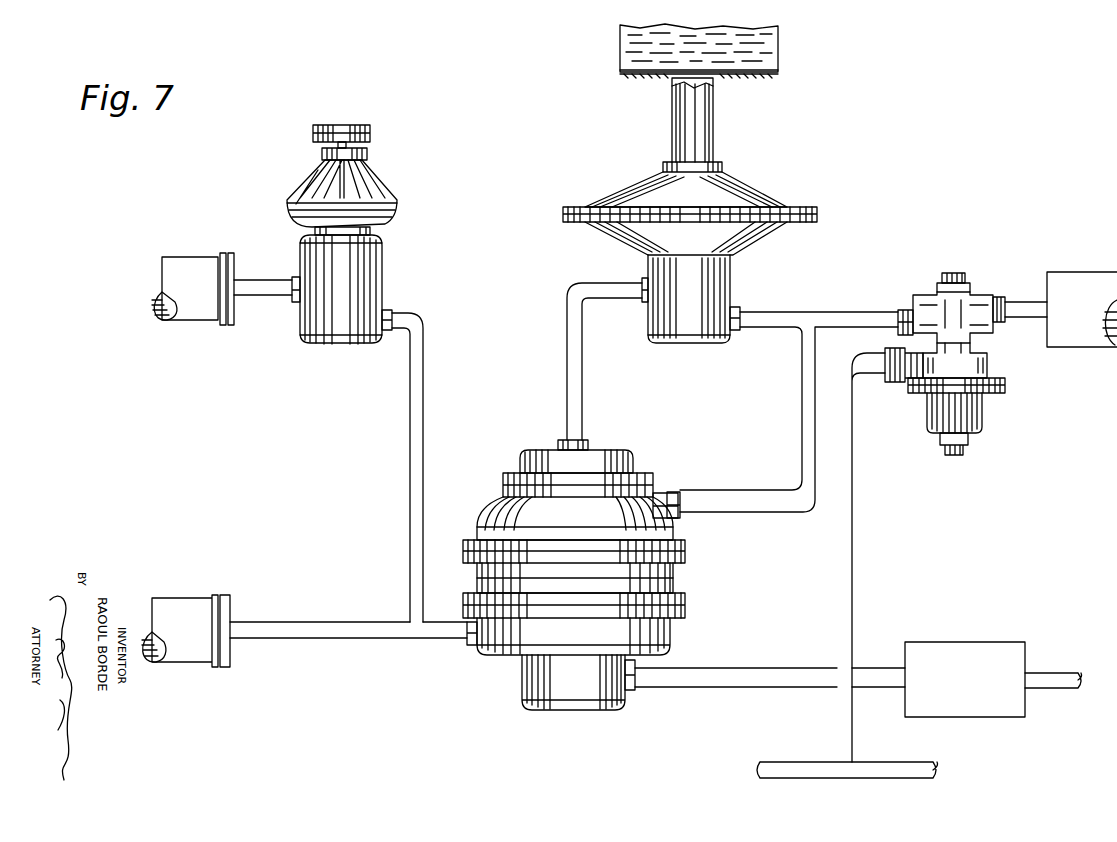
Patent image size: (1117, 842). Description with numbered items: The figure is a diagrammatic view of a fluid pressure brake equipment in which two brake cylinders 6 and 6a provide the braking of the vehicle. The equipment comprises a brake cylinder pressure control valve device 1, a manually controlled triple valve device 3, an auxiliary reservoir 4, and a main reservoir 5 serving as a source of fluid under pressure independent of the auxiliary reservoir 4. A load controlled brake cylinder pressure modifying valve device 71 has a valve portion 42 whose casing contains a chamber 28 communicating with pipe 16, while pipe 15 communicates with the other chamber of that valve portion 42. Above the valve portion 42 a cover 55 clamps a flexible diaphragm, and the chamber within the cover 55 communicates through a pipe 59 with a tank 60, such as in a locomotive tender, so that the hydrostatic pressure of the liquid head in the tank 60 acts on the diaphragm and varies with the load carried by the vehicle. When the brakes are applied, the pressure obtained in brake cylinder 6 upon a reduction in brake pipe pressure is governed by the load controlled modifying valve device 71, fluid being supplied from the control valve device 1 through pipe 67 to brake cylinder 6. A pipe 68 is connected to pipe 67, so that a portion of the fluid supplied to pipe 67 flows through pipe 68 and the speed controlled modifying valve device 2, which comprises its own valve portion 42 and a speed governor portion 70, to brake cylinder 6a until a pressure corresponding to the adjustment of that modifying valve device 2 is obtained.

The brake cylinder pressure control valve device 1 is at (520, 445).
The speed controlled brake cylinder pressure modifying valve device 2 is at (300, 250).
The triple valve device 3 is at (987, 415).
The auxiliary reservoir 4 is at (1081, 278).
The main reservoir 5 is at (985, 650).
The brake cylinder 6 is at (188, 610).
The brake cylinder 6a is at (190, 268).
The pipe 15 is at (565, 300).
The pipe 16 is at (802, 365).
The chamber 28 is at (815, 765).
The valve portion 42 is at (652, 342).
The cover 55 is at (775, 197).
The pipe 59 is at (715, 128).
The tank 60 is at (740, 78).
The pipe 67 is at (345, 625).
The pipe 68 is at (408, 420).
The speed governor portion 70 is at (380, 175).
The load controlled brake cylinder pressure modifying valve device 71 is at (618, 247).